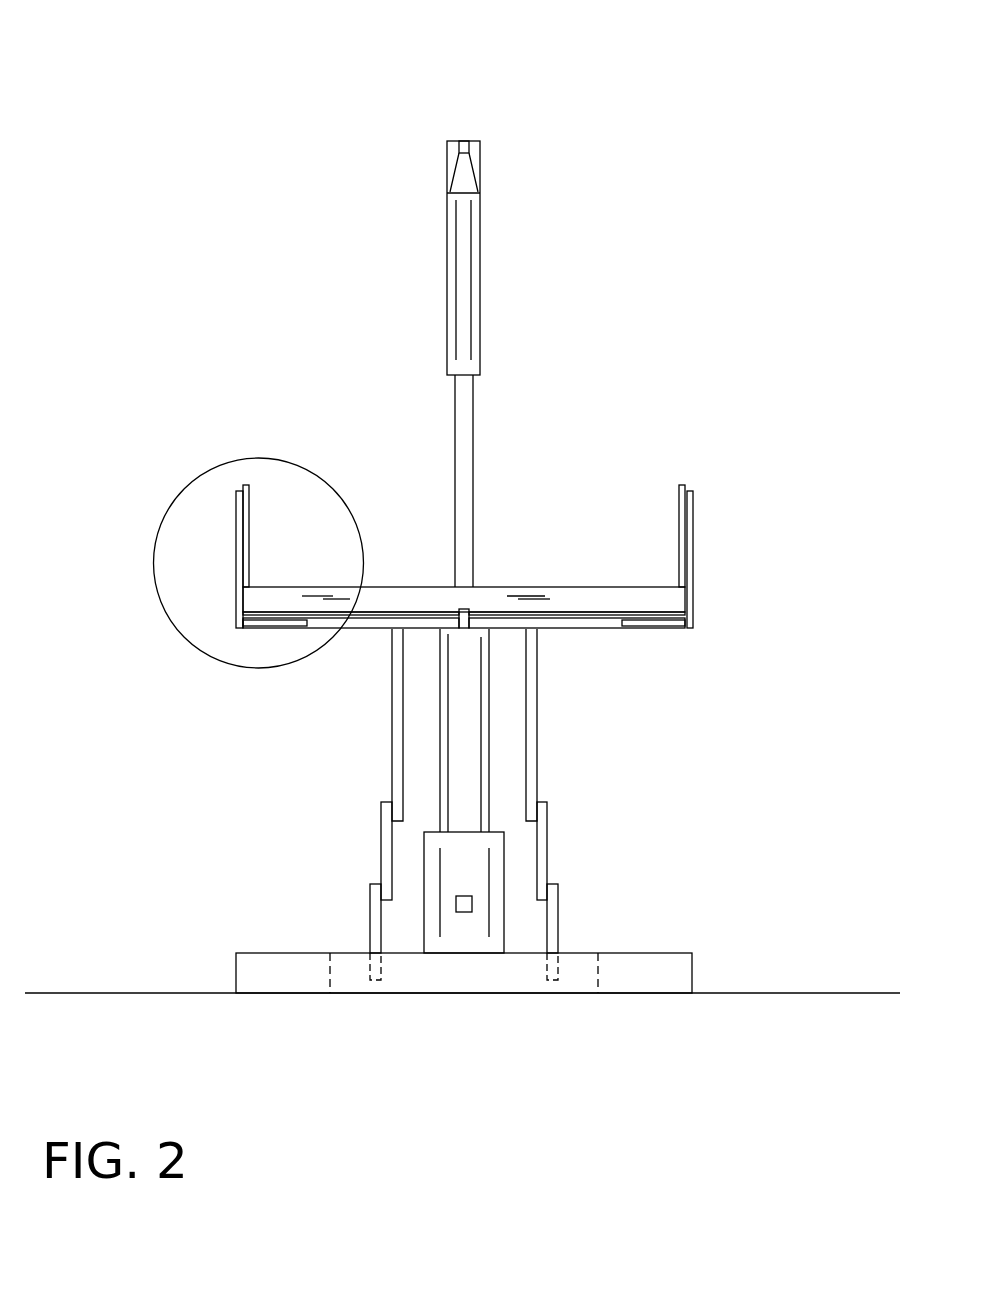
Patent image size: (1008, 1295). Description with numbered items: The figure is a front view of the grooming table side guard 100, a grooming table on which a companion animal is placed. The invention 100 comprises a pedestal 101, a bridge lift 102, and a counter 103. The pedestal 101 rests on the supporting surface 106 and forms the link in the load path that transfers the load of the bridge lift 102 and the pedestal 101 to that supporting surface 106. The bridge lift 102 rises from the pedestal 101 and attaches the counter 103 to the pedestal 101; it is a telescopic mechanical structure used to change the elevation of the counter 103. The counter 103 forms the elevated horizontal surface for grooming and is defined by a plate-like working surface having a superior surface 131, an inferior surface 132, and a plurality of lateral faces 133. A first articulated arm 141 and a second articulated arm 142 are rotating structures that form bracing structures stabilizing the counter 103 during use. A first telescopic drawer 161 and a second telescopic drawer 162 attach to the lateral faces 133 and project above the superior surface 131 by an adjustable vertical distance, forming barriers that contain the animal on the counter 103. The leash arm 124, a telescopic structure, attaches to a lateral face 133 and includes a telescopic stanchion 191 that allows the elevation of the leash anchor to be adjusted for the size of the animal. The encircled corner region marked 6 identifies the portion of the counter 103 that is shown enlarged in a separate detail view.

The grooming table side guard 100 is at (146, 108).
The pedestal 101 is at (674, 970).
The bridge lift 102 is at (572, 791).
The counter 103 is at (541, 569).
The supporting surface 106 is at (786, 993).
The leash arm 124 is at (481, 361).
The superior surface 131 is at (633, 587).
The inferior surface 132 is at (570, 608).
The plurality of lateral faces 133 is at (530, 598).
The first articulated arm 141 is at (379, 818).
The second articulated arm 142 is at (537, 770).
The first telescopic drawer 161 is at (340, 630).
The second telescopic drawer 162 is at (585, 630).
The telescopic stanchion 191 is at (489, 858).
The detail circle for FIG. 6 is at (173, 502).